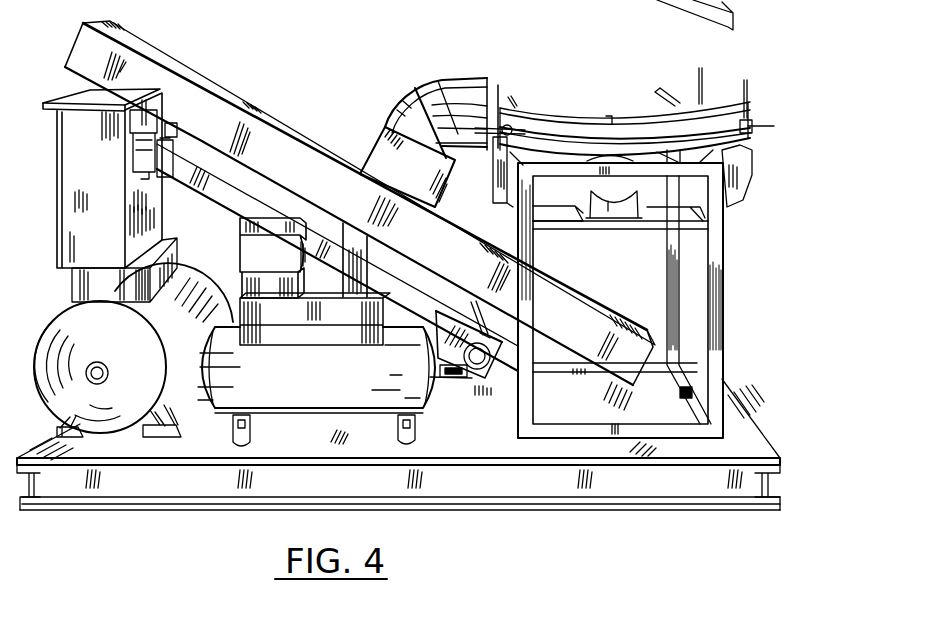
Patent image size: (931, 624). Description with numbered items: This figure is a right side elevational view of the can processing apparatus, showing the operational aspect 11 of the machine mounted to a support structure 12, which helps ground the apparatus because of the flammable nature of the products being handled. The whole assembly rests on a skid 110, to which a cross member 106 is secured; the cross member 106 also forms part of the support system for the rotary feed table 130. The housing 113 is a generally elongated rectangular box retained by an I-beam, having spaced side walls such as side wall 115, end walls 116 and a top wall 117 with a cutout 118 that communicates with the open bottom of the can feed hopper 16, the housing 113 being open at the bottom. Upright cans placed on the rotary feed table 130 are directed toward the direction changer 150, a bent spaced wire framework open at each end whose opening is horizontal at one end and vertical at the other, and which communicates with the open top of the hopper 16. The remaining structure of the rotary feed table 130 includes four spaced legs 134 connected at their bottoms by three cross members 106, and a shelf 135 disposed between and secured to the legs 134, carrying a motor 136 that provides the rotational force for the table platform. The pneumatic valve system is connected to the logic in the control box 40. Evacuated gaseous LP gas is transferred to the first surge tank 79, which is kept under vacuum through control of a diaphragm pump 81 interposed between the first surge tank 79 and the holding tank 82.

The operational aspect 11 is at (305, 108).
The support structure 12 is at (763, 415).
The can feed hopper 16 is at (424, 186).
The control box 40 is at (110, 181).
The first surge tank 79 is at (147, 386).
The diaphragm pump 81 is at (280, 268).
The holding tank 82 is at (333, 400).
The cross member 106 is at (686, 432).
The skid 110 is at (768, 478).
The housing 113 is at (243, 90).
The side wall 115 is at (306, 179).
The end walls 116 is at (80, 38).
The top wall 117 is at (172, 68).
The cutout 118 is at (358, 168).
The rotary feed table 130 is at (558, 106).
The legs 134 is at (717, 314).
The shelf 135 is at (620, 218).
The motor 136 is at (627, 183).
The direction changer 150 is at (460, 74).